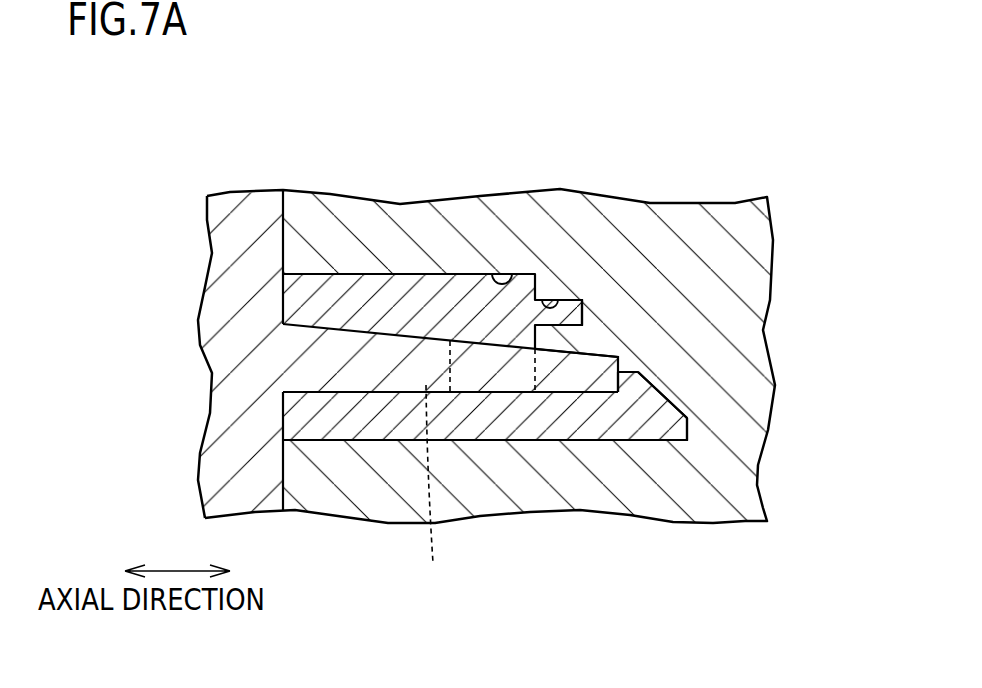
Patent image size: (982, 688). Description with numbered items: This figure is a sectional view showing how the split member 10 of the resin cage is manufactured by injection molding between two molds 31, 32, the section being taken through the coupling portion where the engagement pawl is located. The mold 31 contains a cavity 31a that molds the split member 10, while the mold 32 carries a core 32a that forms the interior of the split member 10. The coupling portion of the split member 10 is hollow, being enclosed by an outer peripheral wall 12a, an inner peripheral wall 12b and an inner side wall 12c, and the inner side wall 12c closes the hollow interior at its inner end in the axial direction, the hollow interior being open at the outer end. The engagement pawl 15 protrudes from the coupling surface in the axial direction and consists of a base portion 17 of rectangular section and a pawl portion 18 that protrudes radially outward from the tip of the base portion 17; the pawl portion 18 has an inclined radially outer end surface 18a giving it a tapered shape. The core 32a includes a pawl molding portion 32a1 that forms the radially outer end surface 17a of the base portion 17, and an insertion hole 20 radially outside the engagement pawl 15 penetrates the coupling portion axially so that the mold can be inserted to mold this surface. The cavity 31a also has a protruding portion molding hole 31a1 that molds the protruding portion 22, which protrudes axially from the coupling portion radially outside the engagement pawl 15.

The split member 10 is at (433, 274).
The outer peripheral wall 12a is at (357, 287).
The inner peripheral wall 12b is at (313, 423).
The inner side wall 12c is at (433, 492).
The engagement pawl 15 is at (633, 443).
The base portion 17 is at (583, 427).
The radially outer end surface 17a is at (592, 388).
The pawl portion 18 is at (640, 370).
The inclined radially outer end surface 18a is at (672, 403).
The insertion hole 20 is at (477, 369).
The protruding portion 22 is at (567, 307).
The mold 31 is at (698, 230).
The cavity 31a is at (492, 273).
The protruding portion molding hole 31a1 is at (545, 298).
The mold 32 is at (222, 243).
The core 32a is at (342, 377).
The pawl molding portion 32a1 is at (558, 378).